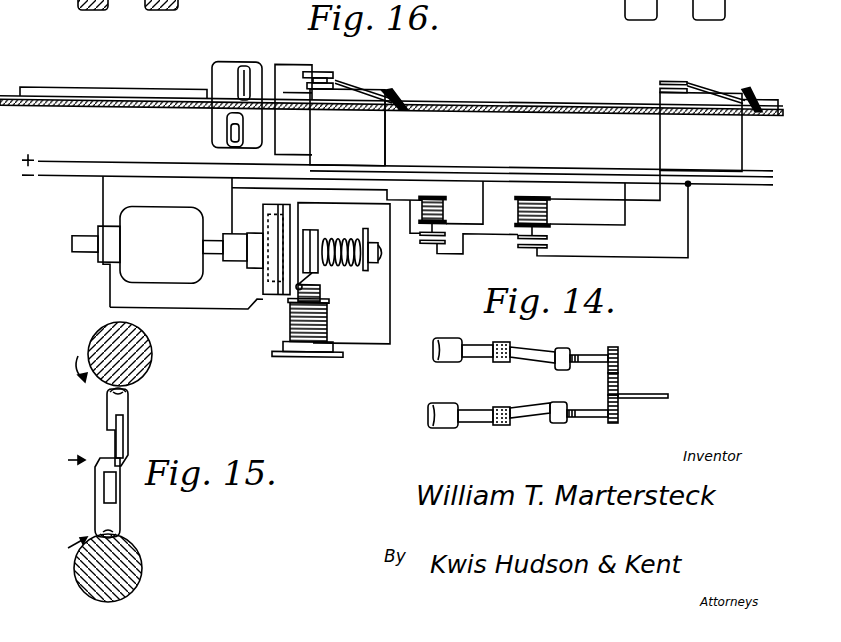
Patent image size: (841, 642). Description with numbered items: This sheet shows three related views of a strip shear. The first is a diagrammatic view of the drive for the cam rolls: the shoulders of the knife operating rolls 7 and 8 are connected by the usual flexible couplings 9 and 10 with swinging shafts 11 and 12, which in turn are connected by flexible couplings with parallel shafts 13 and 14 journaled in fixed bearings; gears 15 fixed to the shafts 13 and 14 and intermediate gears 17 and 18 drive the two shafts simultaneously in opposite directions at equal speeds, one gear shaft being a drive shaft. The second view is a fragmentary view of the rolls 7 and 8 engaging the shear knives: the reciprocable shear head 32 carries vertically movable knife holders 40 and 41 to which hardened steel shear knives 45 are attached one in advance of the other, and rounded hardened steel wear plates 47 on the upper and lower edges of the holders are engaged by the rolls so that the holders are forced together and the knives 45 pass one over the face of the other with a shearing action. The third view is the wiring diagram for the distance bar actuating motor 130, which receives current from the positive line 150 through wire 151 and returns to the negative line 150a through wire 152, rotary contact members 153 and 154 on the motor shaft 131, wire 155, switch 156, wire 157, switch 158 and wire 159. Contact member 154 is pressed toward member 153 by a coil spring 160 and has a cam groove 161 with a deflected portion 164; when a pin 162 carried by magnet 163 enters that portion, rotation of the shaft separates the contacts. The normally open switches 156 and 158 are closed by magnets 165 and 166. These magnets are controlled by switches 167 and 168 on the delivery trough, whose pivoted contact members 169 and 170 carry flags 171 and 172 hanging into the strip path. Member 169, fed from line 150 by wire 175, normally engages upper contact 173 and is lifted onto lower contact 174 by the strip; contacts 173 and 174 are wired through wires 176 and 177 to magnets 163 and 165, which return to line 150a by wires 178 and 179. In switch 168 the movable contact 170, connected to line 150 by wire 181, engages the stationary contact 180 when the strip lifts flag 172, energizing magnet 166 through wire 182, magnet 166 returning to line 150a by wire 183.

In FIG. 15, the roll 7 is at (154, 360).
In FIG. 14, the roll 7 is at (447, 339).
In FIG. 15, the roll 8 is at (140, 567).
In FIG. 14, the roll 8 is at (448, 403).
In FIG. 14, the flexible coupling 9 is at (502, 362).
In FIG. 14, the flexible coupling 10 is at (500, 425).
In FIG. 14, the swinging shaft 11 is at (533, 363).
In FIG. 14, the swinging shaft 12 is at (527, 413).
In FIG. 14, the parallel shaft 13 is at (587, 364).
In FIG. 14, the parallel shaft 14 is at (595, 418).
In FIG. 14, the gear 15 is at (618, 356).
In FIG. 14, the intermediate gear 17 is at (618, 380).
In FIG. 14, the intermediate gear 18 is at (619, 395).
In FIG. 16, the shear head 32 is at (237, 64).
In FIG. 16, the knife holder 40 is at (237, 98).
In FIG. 15, the knife holder 40 is at (130, 407).
In FIG. 16, the knife holder 41 is at (230, 131).
In FIG. 15, the knife holder 41 is at (120, 513).
In FIG. 15, the shear knife 45 is at (118, 474).
In FIG. 15, the wear plate 47 is at (127, 391).
In FIG. 16, the motor 130 is at (171, 220).
In FIG. 16, the motor shaft 131 is at (215, 261).
In FIG. 16, the positive line 150 is at (127, 166).
In FIG. 16, the negative line 150a is at (173, 180).
In FIG. 16, the wire 151 is at (104, 197).
In FIG. 16, the wire 152 is at (174, 306).
In FIG. 16, the rotary contact member 153 is at (263, 216).
In FIG. 16, the rotary contact member 154 is at (283, 206).
In FIG. 16, the wire 155 is at (345, 236).
In FIG. 16, the switch 156 is at (417, 246).
In FIG. 16, the wire 157 is at (493, 236).
In FIG. 16, the switch 158 is at (548, 240).
In FIG. 16, the wire 159 is at (645, 247).
In FIG. 16, the coil spring 160 is at (347, 272).
In FIG. 16, the cam groove 161 is at (318, 240).
In FIG. 16, the pin 162 is at (316, 283).
In FIG. 16, the magnet 163 is at (328, 323).
In FIG. 16, the deflected portion 164 is at (291, 289).
In FIG. 16, the magnet 165 is at (452, 202).
In FIG. 16, the magnet 166 is at (556, 211).
In FIG. 16, the switch 167 is at (306, 79).
In FIG. 16, the switch 168 is at (660, 82).
In FIG. 16, the movable contact member 169 is at (337, 75).
In FIG. 16, the movable contact member 170 is at (668, 78).
In FIG. 16, the flag 171 is at (400, 98).
In FIG. 16, the flag 172 is at (752, 90).
In FIG. 16, the upper contact 173 is at (317, 73).
In FIG. 16, the lower contact 174 is at (368, 86).
In FIG. 16, the wire 175 is at (387, 141).
In FIG. 16, the wire 176 is at (275, 139).
In FIG. 16, the wire 177 is at (313, 138).
In FIG. 16, the wire 178 is at (390, 297).
In FIG. 16, the wire 179 is at (483, 197).
In FIG. 16, the stationary contact 180 is at (683, 79).
In FIG. 16, the wire 181 is at (745, 146).
In FIG. 16, the wire 182 is at (660, 145).
In FIG. 16, the wire 183 is at (627, 213).